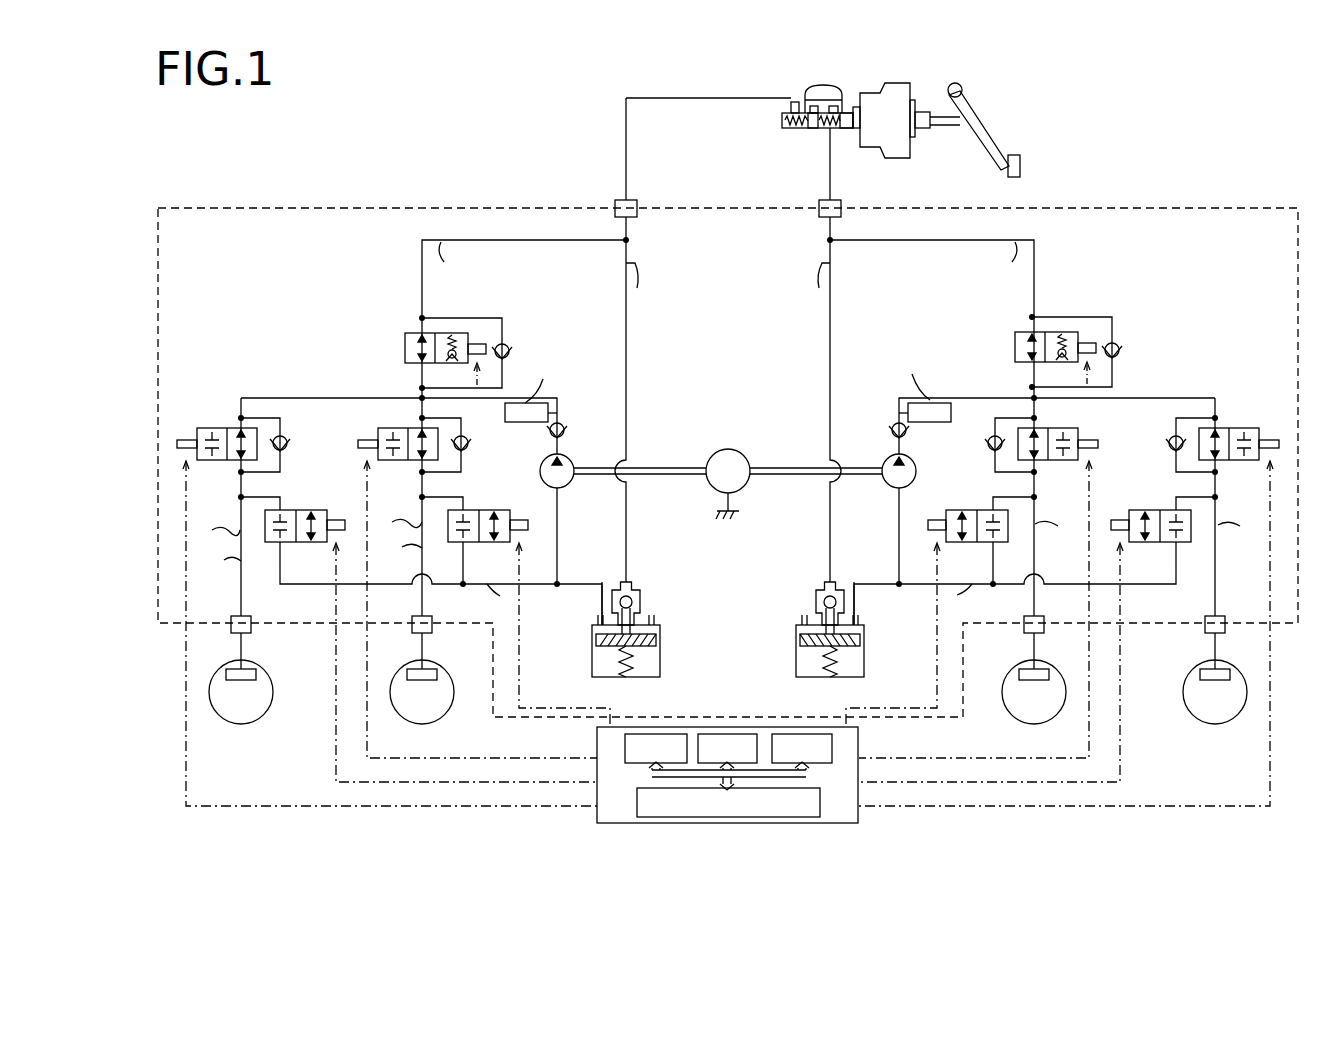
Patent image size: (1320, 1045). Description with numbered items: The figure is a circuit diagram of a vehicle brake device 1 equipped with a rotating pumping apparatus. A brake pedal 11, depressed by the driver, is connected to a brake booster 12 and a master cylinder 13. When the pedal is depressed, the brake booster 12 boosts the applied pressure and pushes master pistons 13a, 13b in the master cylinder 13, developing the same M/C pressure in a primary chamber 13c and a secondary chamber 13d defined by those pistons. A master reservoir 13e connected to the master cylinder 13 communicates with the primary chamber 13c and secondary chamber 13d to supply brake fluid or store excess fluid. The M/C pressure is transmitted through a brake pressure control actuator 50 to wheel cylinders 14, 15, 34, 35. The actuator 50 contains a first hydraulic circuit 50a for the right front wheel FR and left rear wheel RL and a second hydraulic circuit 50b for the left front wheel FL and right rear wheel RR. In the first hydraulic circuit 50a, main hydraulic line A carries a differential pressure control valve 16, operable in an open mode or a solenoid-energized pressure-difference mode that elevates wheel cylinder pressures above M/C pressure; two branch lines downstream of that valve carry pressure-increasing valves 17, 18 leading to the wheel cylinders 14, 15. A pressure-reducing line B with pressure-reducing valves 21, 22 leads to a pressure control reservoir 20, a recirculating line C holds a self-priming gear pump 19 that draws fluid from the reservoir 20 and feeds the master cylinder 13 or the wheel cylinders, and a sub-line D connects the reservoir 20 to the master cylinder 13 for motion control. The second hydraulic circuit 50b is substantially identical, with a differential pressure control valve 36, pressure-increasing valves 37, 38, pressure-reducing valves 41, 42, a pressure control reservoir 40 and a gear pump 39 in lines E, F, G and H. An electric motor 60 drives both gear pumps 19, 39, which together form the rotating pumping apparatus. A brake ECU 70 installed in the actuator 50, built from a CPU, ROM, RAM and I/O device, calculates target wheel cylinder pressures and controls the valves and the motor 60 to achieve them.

The brake device 1 is at (1082, 112).
The brake pedal 11 is at (970, 112).
The brake booster 12 is at (893, 82).
The master cylinder 13 is at (778, 120).
The master piston 13a is at (814, 128).
The master piston 13b is at (847, 132).
The primary chamber 13c is at (786, 129).
The secondary chamber 13d is at (835, 128).
The master reservoir 13e is at (822, 85).
The wheel cylinder 14 is at (228, 673).
The wheel cylinder 15 is at (408, 672).
The differential pressure control valve 16 is at (407, 348).
The pressure-increasing valve 17 is at (232, 428).
The pressure-increasing valve 18 is at (415, 428).
The gear pump 19 is at (540, 471).
The pressure control reservoir 20 is at (590, 668).
The pressure-reducing valve 21 is at (283, 510).
The pressure-reducing valve 22 is at (465, 510).
The wheel cylinder 34 is at (1228, 673).
The wheel cylinder 35 is at (1068, 663).
The differential pressure control valve 36 is at (1015, 348).
The pressure-increasing valve 37 is at (1220, 427).
The pressure-increasing valve 38 is at (1038, 428).
The gear pump 39 is at (915, 471).
The pressure control reservoir 40 is at (868, 668).
The pressure-reducing valve 41 is at (1172, 508).
The pressure-reducing valve 42 is at (990, 508).
The brake pressure control actuator 50 is at (1280, 207).
The first hydraulic circuit 50a is at (227, 262).
The second hydraulic circuit 50b is at (1228, 262).
The electric motor 60 is at (726, 448).
The brake ECU 70 is at (860, 733).